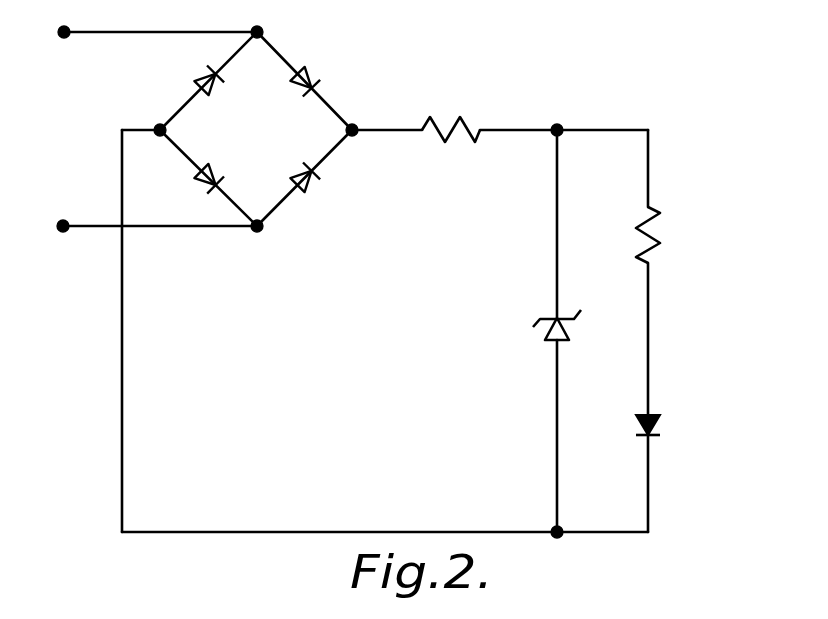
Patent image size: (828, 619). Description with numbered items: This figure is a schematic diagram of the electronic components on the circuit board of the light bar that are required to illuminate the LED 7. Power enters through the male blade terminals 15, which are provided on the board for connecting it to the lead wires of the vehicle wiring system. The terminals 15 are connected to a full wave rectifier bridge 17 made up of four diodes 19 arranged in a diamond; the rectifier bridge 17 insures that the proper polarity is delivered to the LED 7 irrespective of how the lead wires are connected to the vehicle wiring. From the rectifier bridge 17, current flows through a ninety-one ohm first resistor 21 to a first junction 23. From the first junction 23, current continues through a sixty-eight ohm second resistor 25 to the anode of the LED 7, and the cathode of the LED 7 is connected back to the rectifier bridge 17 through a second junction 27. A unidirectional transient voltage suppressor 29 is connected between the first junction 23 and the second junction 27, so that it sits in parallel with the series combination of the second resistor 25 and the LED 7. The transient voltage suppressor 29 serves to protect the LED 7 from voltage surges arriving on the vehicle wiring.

The LED 7 is at (659, 424).
The male blade terminals 15 is at (67, 42).
The full wave rectifier bridge 17 is at (280, 53).
The diodes 19 is at (305, 167).
The first resistor 21 is at (465, 118).
The first junction 23 is at (559, 126).
The second resistor 25 is at (657, 236).
The second junction 27 is at (560, 538).
The unidirectional transient voltage suppressor 29 is at (546, 338).